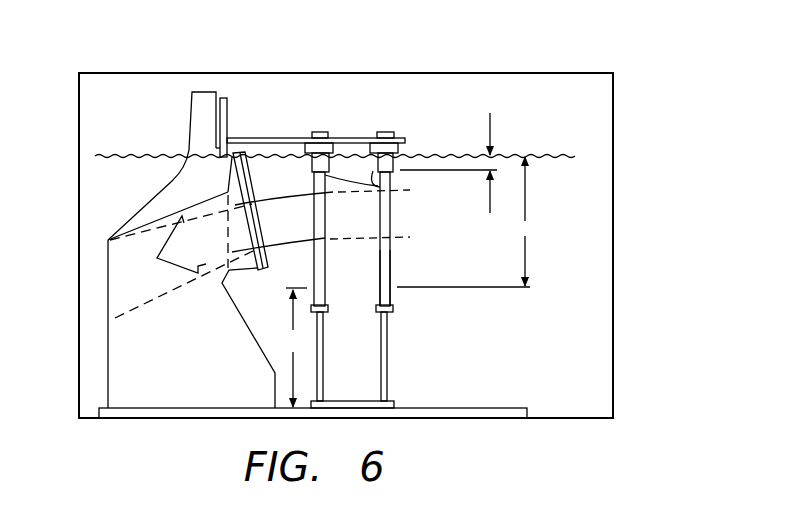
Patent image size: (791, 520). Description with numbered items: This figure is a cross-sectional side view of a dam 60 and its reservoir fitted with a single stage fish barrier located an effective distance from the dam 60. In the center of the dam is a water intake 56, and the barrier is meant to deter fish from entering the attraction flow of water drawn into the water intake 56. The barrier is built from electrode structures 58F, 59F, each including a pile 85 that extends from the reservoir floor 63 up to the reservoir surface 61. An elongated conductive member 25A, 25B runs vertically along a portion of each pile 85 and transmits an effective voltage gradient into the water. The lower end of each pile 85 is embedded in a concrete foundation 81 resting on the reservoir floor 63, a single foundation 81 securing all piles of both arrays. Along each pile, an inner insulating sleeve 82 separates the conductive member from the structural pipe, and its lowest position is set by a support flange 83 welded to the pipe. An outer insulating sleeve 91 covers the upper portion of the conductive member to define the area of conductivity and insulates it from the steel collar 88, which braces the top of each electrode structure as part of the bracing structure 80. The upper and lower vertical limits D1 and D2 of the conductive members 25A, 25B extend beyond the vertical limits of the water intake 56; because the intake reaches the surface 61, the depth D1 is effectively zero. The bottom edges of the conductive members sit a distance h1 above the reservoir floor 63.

The water intake 56 is at (143, 257).
The dam 60 is at (199, 98).
The bracing structure 80 is at (257, 137).
The steel collar 88 is at (406, 146).
The electrode structure 58F is at (318, 131).
The electrode structure 59F is at (382, 131).
The reservoir surface 61 is at (552, 157).
The reservoir floor 63 is at (568, 417).
The outer insulating sleeve 91 is at (384, 191).
The elongated conductive member 25A is at (320, 222).
The elongated conductive member 25B is at (388, 256).
The inner insulating sleeve 82 is at (378, 295).
The support flange 83 is at (391, 318).
The pile 85 is at (390, 370).
The foundation 81 is at (349, 405).
The upper vertical limit depth D1 is at (451, 151).
The lower vertical limit depth D2 is at (468, 222).
The bottom edge height h1 is at (294, 347).